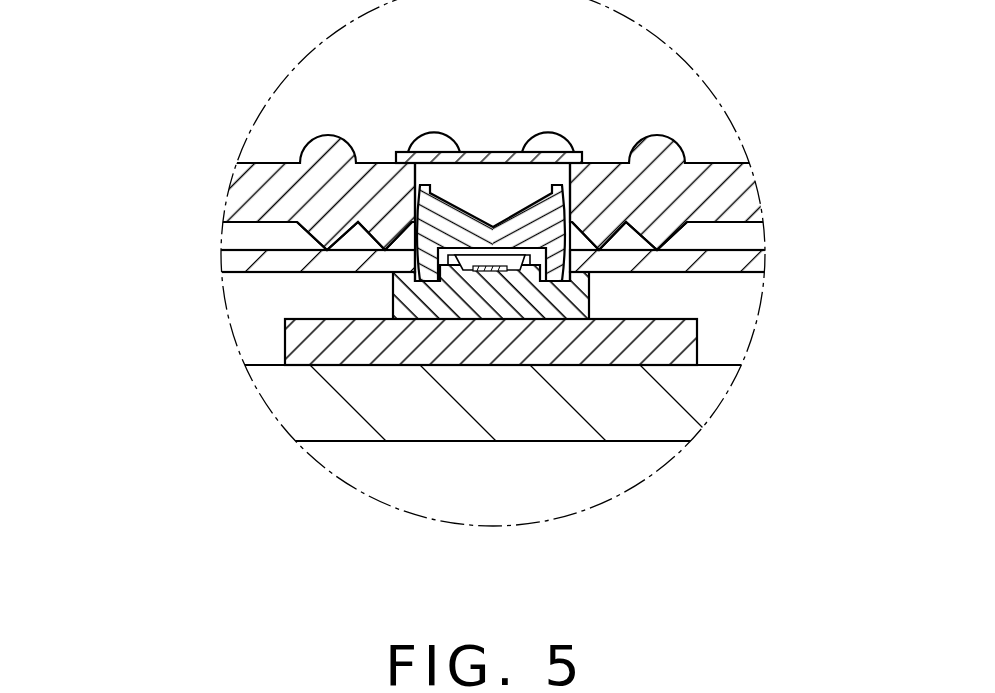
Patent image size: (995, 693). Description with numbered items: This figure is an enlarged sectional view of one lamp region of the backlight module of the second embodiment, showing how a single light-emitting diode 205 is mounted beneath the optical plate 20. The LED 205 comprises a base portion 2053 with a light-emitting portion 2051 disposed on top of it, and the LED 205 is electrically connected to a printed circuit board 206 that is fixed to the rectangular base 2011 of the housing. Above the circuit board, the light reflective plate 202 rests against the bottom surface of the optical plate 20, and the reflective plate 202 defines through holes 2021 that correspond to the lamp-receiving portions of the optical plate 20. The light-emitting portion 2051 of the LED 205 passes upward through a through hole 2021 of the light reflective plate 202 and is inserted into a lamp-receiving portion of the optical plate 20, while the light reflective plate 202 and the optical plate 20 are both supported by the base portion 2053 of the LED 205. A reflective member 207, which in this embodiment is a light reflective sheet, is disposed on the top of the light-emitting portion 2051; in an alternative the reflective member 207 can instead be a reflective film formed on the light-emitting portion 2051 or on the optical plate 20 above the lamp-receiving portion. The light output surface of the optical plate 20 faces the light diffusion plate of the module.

The optical plate 20 is at (722, 193).
The through holes 2021 is at (590, 210).
The light reflective plate 202 is at (733, 258).
The reflective member 207 is at (537, 157).
The light-emitting diode 205 is at (88, 183).
The light-emitting portion 2051 is at (419, 222).
The base portion 2053 is at (432, 303).
The printed circuit board 206 is at (675, 342).
The base 2011 is at (633, 415).